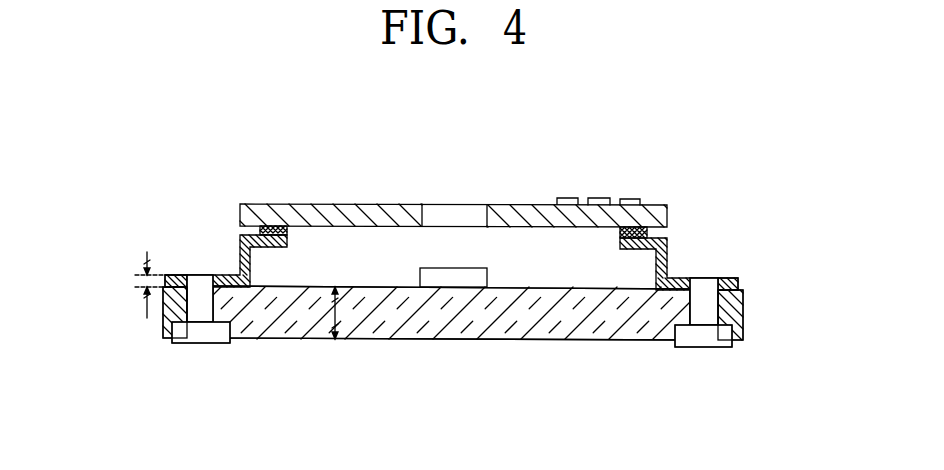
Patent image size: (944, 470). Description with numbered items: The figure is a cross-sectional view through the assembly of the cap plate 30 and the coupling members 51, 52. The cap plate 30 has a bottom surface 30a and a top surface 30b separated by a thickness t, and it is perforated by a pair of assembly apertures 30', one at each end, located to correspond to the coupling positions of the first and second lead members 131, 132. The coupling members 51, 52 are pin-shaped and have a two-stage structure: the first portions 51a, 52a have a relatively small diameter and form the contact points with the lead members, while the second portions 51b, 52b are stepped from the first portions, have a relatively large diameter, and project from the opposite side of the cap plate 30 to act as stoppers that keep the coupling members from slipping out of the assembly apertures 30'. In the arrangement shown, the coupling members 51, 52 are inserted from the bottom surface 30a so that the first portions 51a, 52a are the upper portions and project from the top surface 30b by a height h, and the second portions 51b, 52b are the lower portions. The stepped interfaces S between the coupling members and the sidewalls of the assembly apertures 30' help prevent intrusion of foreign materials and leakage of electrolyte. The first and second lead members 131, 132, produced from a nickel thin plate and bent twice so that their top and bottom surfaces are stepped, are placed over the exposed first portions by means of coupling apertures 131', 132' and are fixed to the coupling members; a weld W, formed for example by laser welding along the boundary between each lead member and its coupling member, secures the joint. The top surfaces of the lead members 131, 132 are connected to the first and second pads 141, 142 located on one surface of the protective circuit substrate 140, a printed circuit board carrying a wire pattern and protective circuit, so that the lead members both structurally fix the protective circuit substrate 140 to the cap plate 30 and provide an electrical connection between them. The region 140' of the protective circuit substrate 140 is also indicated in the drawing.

The cap plate 30 is at (451, 350).
The bottom surface 30a is at (533, 339).
The top surface 30b is at (533, 288).
The assembly aperture 30' is at (452, 345).
The stepped interface S is at (688, 303).
The thickness t is at (341, 313).
The height h is at (153, 285).
The weld W is at (208, 318).
The coupling member 51 is at (822, 315).
The first portion 51a is at (710, 316).
The second portion 51b is at (723, 334).
The coupling member 52 is at (83, 298).
The first portion 52a is at (193, 311).
The second portion 52b is at (170, 328).
The first lead member 131 is at (665, 205).
The coupling aperture 131' is at (730, 243).
The second lead member 132 is at (241, 204).
The coupling aperture 132' is at (174, 241).
The protective circuit substrate 140 is at (453, 174).
The window of cover plate 140' is at (454, 174).
The first pad 141 is at (638, 227).
The second pad 142 is at (266, 224).